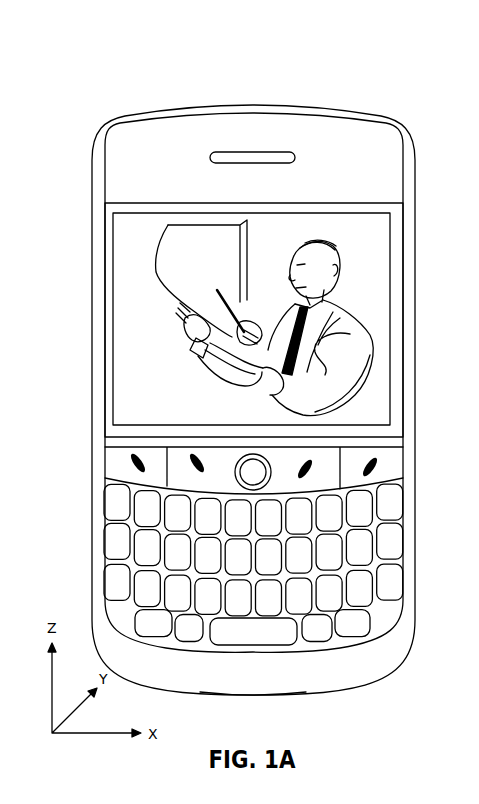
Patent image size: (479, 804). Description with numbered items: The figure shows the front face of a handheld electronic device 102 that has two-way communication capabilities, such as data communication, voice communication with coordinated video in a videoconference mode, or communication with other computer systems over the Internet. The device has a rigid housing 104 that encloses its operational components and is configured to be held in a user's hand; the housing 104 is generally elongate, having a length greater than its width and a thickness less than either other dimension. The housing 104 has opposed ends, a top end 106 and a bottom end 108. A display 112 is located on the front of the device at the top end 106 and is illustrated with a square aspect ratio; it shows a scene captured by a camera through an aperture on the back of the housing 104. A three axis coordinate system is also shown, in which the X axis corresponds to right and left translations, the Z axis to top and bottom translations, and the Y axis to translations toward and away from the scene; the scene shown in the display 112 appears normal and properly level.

The handheld electronic device 102 is at (275, 374).
The rigid housing 104 is at (178, 110).
The top end 106 is at (306, 104).
The bottom end 108 is at (327, 690).
The display 112 is at (377, 257).